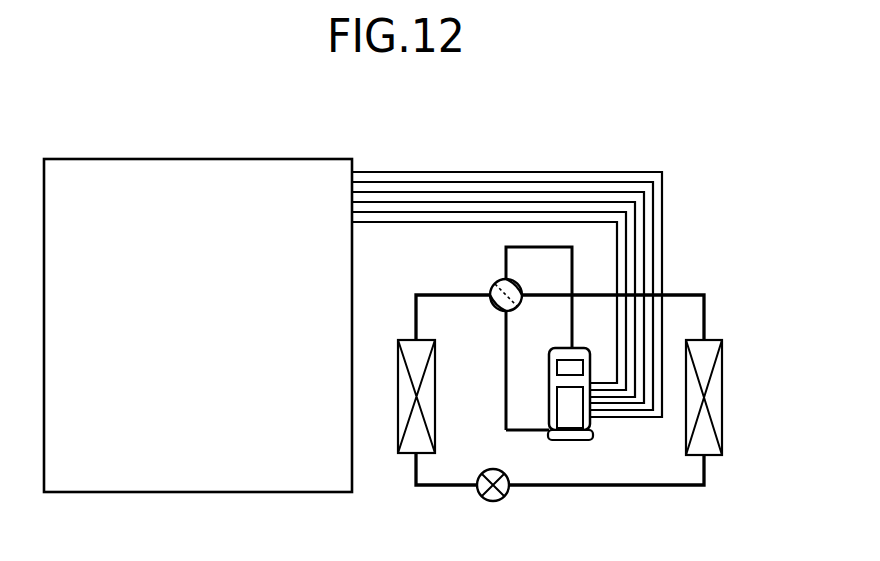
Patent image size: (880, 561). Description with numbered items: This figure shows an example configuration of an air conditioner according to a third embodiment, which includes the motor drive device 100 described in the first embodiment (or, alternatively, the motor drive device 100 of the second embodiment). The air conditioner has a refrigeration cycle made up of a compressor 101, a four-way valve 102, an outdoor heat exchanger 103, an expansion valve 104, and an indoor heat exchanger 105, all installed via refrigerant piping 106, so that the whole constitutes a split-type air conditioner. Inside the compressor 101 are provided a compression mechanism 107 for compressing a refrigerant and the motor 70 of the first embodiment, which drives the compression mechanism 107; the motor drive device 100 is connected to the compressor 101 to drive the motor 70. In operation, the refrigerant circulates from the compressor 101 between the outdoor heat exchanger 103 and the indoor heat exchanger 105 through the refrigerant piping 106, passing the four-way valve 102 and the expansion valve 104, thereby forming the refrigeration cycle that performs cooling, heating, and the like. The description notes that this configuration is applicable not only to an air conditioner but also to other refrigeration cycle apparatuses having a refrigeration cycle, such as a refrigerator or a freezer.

The motor drive device 100 is at (200, 158).
The compressor 101 is at (595, 433).
The four-way valve 102 is at (492, 308).
The outdoor heat exchanger 103 is at (405, 457).
The expansion valve 104 is at (493, 502).
The indoor heat exchanger 105 is at (710, 335).
The refrigerant piping 106 is at (590, 487).
The compression mechanism 107 is at (568, 370).
The motor 70 is at (571, 418).